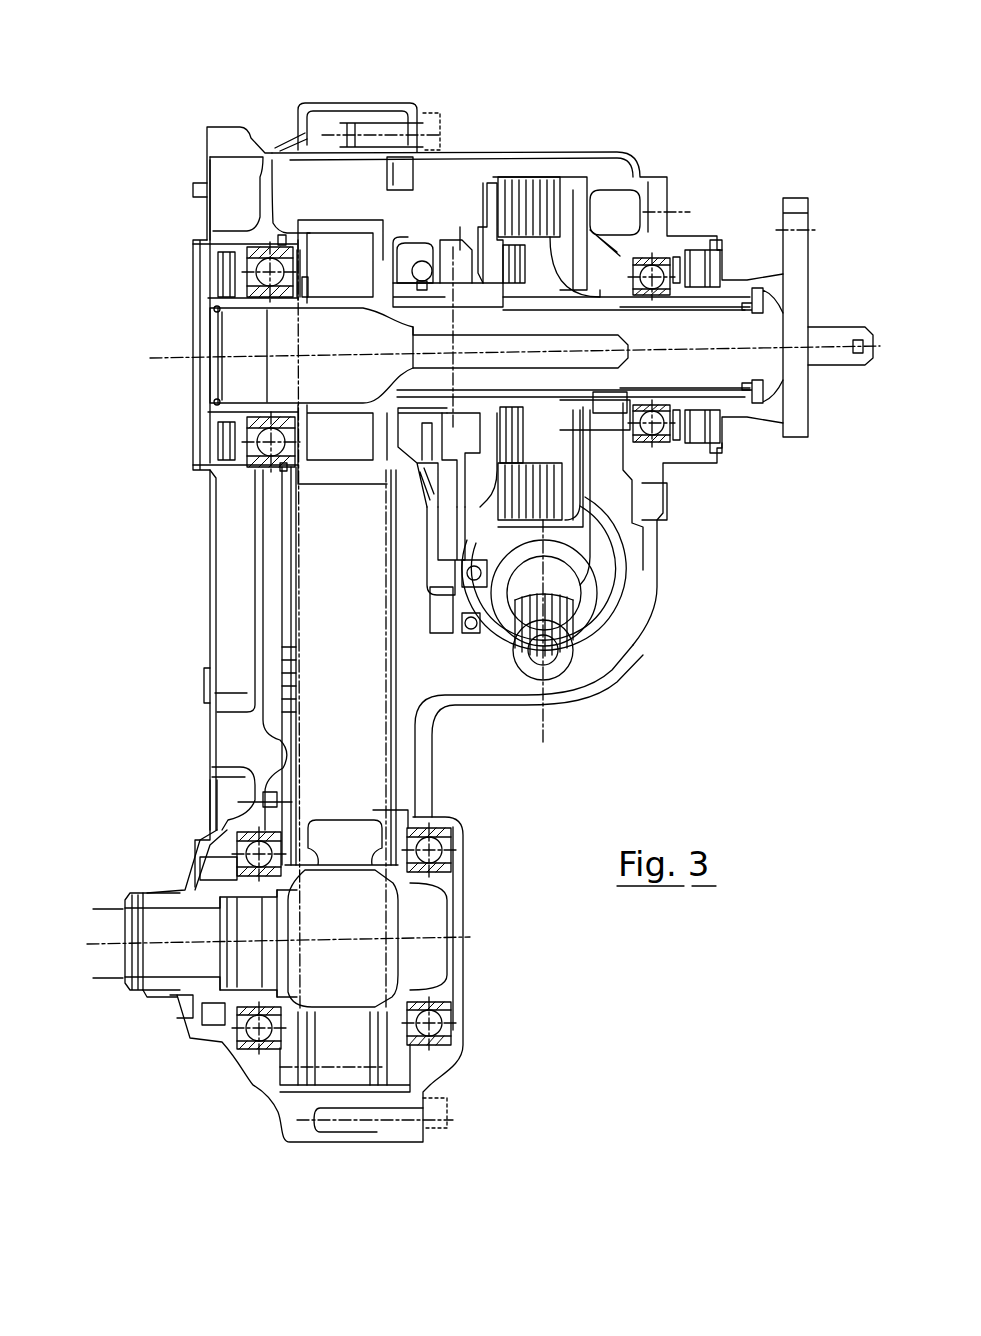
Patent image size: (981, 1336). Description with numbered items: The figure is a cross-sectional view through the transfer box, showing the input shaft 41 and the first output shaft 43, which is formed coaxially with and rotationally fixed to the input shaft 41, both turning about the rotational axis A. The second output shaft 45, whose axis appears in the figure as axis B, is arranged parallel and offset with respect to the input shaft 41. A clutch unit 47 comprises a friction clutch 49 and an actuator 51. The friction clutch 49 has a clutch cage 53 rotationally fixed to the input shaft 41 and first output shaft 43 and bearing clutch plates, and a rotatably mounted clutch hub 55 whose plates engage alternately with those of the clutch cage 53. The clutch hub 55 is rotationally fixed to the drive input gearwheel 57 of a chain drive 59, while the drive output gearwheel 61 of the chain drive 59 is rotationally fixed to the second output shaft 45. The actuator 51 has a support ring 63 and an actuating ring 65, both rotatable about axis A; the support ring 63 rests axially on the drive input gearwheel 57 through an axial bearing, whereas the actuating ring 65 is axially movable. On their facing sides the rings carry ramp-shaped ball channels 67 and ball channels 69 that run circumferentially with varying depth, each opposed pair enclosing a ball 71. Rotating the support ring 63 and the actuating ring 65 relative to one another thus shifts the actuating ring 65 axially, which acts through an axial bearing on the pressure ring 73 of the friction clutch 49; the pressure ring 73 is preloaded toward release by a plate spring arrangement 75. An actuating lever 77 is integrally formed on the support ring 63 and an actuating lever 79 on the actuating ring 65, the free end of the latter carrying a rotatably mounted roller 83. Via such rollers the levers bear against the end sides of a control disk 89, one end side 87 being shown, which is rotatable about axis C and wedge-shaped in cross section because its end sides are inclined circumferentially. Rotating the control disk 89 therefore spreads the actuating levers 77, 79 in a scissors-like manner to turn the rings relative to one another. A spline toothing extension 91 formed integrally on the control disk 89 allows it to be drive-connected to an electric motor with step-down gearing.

The input shaft 41 is at (232, 410).
The first output shaft 43 is at (838, 338).
The second output shaft 45 is at (155, 985).
The clutch unit 47 is at (479, 182).
The friction clutch 49 is at (529, 148).
The actuator 51 is at (520, 722).
The clutch cage 53 is at (563, 180).
The clutch hub 55 is at (562, 243).
The drive input gearwheel 57 is at (333, 253).
The chain drive 59 is at (296, 595).
The drive output gearwheel 61 is at (332, 1038).
The support ring 63 is at (413, 243).
The actuating ring 65 is at (455, 250).
The ball channels 67 is at (414, 242).
The ball channels 69 is at (447, 247).
The ball 71 is at (428, 262).
The pressure ring 73 is at (490, 195).
The plate spring arrangement 75 is at (508, 296).
The actuating lever 77 is at (423, 478).
The actuating lever 79 is at (447, 533).
The roller 83 is at (477, 621).
The end side 87 is at (603, 613).
The control disk 89 is at (630, 533).
The spline toothing extension 91 is at (562, 657).
The rotational axis A is at (166, 357).
The output shaft axis B is at (477, 935).
The axis C is at (546, 735).